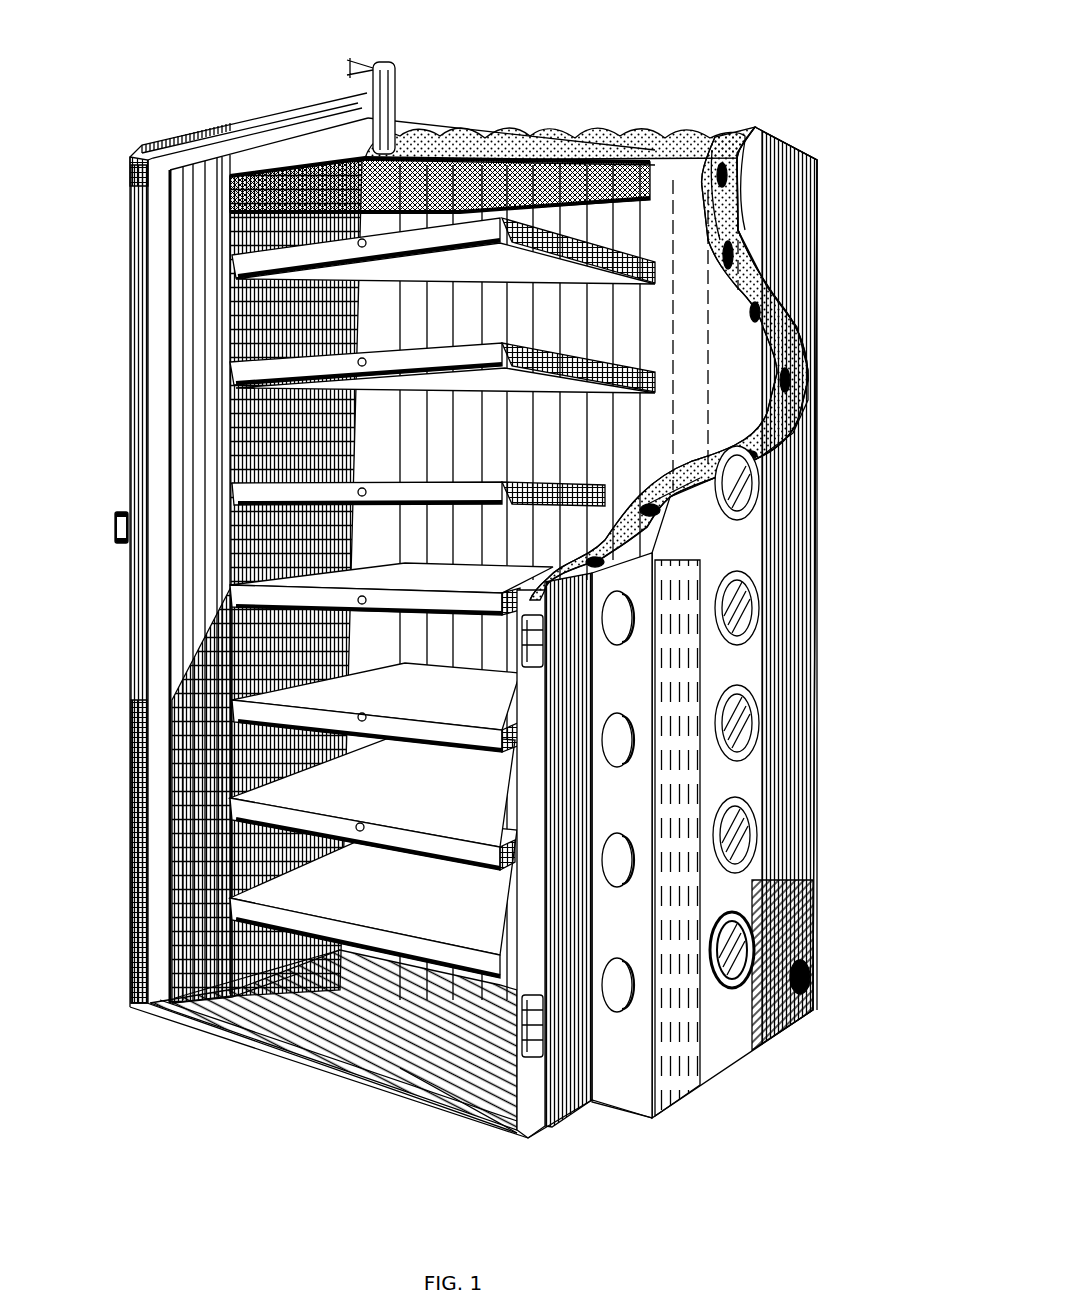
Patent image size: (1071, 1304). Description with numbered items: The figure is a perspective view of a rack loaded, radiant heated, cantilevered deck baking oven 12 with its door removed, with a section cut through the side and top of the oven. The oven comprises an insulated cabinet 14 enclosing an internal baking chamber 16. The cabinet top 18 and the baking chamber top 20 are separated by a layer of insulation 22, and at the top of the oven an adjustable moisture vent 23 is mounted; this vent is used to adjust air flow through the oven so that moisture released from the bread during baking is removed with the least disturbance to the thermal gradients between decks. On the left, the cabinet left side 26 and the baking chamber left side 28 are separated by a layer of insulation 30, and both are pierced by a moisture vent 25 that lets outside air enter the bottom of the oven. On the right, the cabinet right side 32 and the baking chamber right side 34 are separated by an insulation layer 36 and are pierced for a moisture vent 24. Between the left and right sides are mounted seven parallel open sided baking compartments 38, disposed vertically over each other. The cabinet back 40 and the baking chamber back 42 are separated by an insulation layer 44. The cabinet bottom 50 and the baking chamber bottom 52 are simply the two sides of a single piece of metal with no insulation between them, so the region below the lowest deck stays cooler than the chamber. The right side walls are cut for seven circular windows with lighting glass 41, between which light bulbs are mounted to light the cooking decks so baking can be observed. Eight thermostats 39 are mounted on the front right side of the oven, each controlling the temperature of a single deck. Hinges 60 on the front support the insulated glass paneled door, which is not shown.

The radiant heated deck oven 12 is at (60, 113).
The cabinet 14 is at (129, 222).
The baking chamber 16 is at (217, 428).
The cabinet top 18 is at (487, 140).
The baking chamber top 20 is at (647, 170).
The insulation in top of oven 22 is at (458, 128).
The moisture vent top 23 is at (380, 60).
The moisture vent right side 24 is at (812, 976).
The moisture vent left side 25 is at (327, 953).
The cabinet left side 26 is at (141, 148).
The baking chamber left side 28 is at (200, 560).
The insulation in wall 30 is at (740, 137).
The cabinet right side 32 is at (750, 548).
The baking chamber right side 34 is at (770, 357).
The insulation in wall 36 is at (780, 325).
The baking compartments 38 is at (442, 693).
The thermostats 39 is at (826, 1005).
The cabinet back 40 is at (818, 165).
The lighting glass 41 is at (826, 945).
The baking chamber back 42 is at (703, 257).
The insulation 44 is at (648, 504).
The cabinet bottom 50 is at (317, 1040).
The baking chamber bottom 52 is at (463, 928).
The hinges 60 is at (545, 1035).